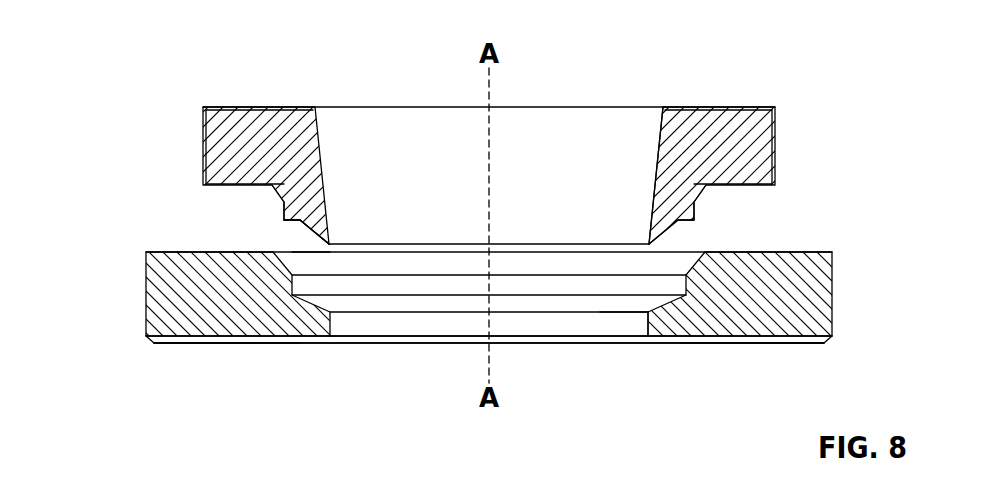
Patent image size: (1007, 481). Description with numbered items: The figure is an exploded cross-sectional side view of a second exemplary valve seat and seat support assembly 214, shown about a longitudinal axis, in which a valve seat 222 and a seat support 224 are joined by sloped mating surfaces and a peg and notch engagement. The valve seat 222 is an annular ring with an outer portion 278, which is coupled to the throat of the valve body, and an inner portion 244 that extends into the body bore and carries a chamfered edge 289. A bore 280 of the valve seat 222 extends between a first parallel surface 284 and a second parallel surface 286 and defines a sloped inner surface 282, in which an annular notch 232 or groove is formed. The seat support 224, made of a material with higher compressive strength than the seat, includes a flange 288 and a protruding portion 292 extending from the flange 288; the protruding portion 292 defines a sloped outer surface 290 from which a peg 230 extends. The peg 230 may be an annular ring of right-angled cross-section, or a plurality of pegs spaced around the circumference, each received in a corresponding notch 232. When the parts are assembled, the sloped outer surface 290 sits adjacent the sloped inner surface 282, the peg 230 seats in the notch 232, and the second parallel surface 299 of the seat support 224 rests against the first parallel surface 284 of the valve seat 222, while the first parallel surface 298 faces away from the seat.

The valve seat and seat support assembly 214 is at (143, 67).
The valve seat 222 is at (810, 287).
The seat support 224 is at (760, 125).
The peg 230 is at (296, 221).
The annular notch 232 is at (306, 298).
The inner portion 244 is at (370, 320).
The outer portion 278 is at (830, 330).
The bore 280 is at (625, 323).
The sloped inner surface 282 is at (697, 253).
The first parallel surface 284 is at (160, 252).
The second parallel surface 286 is at (165, 343).
The flange 288 is at (760, 163).
The chamfered edge 289 is at (453, 335).
The sloped outer surface 290 is at (273, 188).
The protruding portion 292 is at (703, 193).
The first parallel surface 298 is at (240, 108).
The second parallel surface 299 is at (208, 191).